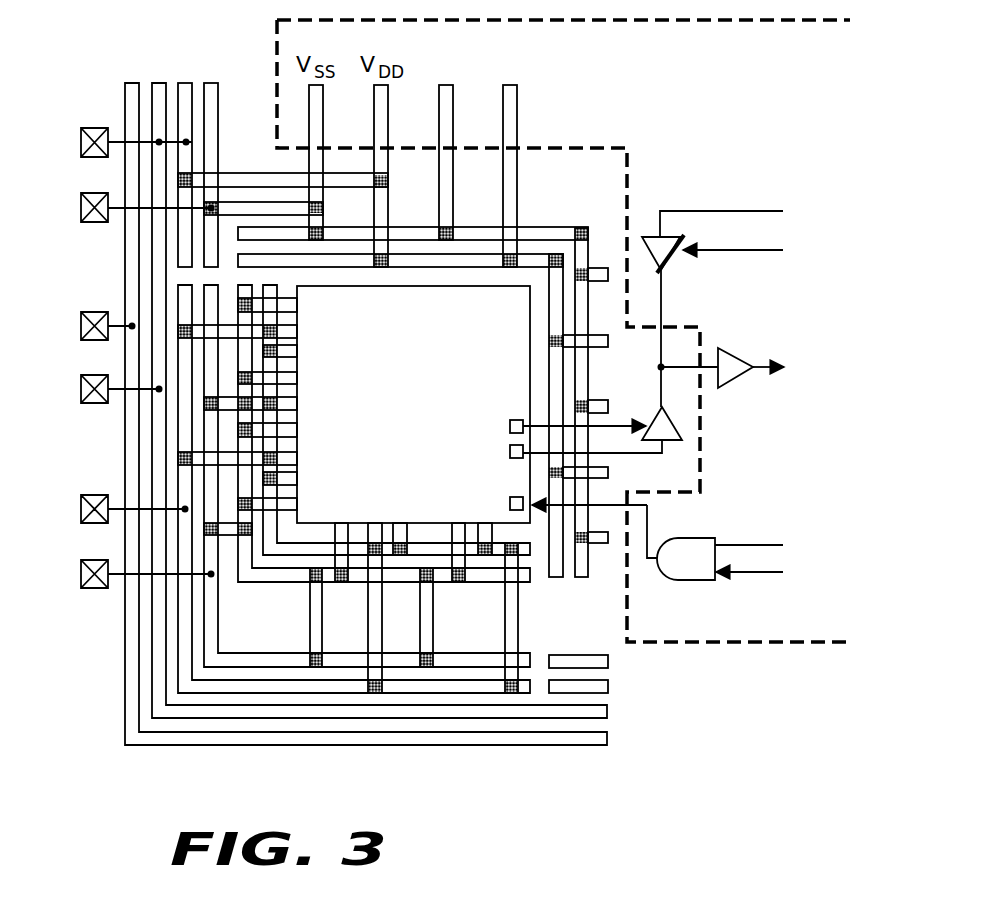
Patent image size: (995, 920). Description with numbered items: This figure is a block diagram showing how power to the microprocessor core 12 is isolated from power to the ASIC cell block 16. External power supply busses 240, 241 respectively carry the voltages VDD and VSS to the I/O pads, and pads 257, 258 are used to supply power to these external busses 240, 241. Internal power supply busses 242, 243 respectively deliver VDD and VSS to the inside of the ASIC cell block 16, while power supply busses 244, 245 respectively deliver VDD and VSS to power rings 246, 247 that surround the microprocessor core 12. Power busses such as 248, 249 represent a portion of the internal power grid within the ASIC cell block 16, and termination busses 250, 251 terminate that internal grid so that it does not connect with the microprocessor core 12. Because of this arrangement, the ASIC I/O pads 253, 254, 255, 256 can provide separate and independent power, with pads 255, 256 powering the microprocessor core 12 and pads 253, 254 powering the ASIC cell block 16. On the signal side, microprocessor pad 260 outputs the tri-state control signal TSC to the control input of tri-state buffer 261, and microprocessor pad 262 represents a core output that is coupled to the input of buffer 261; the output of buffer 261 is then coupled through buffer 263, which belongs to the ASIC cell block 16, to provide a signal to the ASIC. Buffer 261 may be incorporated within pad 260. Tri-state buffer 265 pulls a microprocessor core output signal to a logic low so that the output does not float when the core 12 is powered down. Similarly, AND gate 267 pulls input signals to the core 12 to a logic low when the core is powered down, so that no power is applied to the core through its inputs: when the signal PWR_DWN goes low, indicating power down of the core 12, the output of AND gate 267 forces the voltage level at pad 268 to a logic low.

The microprocessor core 12 is at (400, 379).
The ASIC cell block 16 is at (730, 106).
The external power supply bus 240 is at (610, 740).
The external power supply bus 241 is at (610, 712).
The internal power supply bus 242 is at (186, 81).
The internal power supply bus 243 is at (212, 81).
The power supply bus 244 is at (232, 678).
The power supply bus 245 is at (452, 653).
The power ring 246 is at (295, 567).
The power ring 247 is at (488, 583).
The power bus 248 is at (323, 128).
The power bus 249 is at (388, 128).
The termination bus 250 is at (478, 254).
The termination bus 251 is at (413, 227).
The ASIC I/O pad 253 is at (93, 127).
The ASIC I/O pad 254 is at (93, 223).
The ASIC I/O pad 255 is at (93, 494).
The ASIC I/O pad 256 is at (93, 589).
The pad 257 is at (93, 311).
The pad 258 is at (93, 404).
The microprocessor pad 260 is at (510, 427).
The tri-state buffer 261 is at (655, 417).
The microprocessor pad 262 is at (510, 449).
The buffer 263 is at (732, 389).
The tri-state buffer 265 is at (672, 265).
The AND gate 267 is at (697, 582).
The pad 268 is at (510, 507).